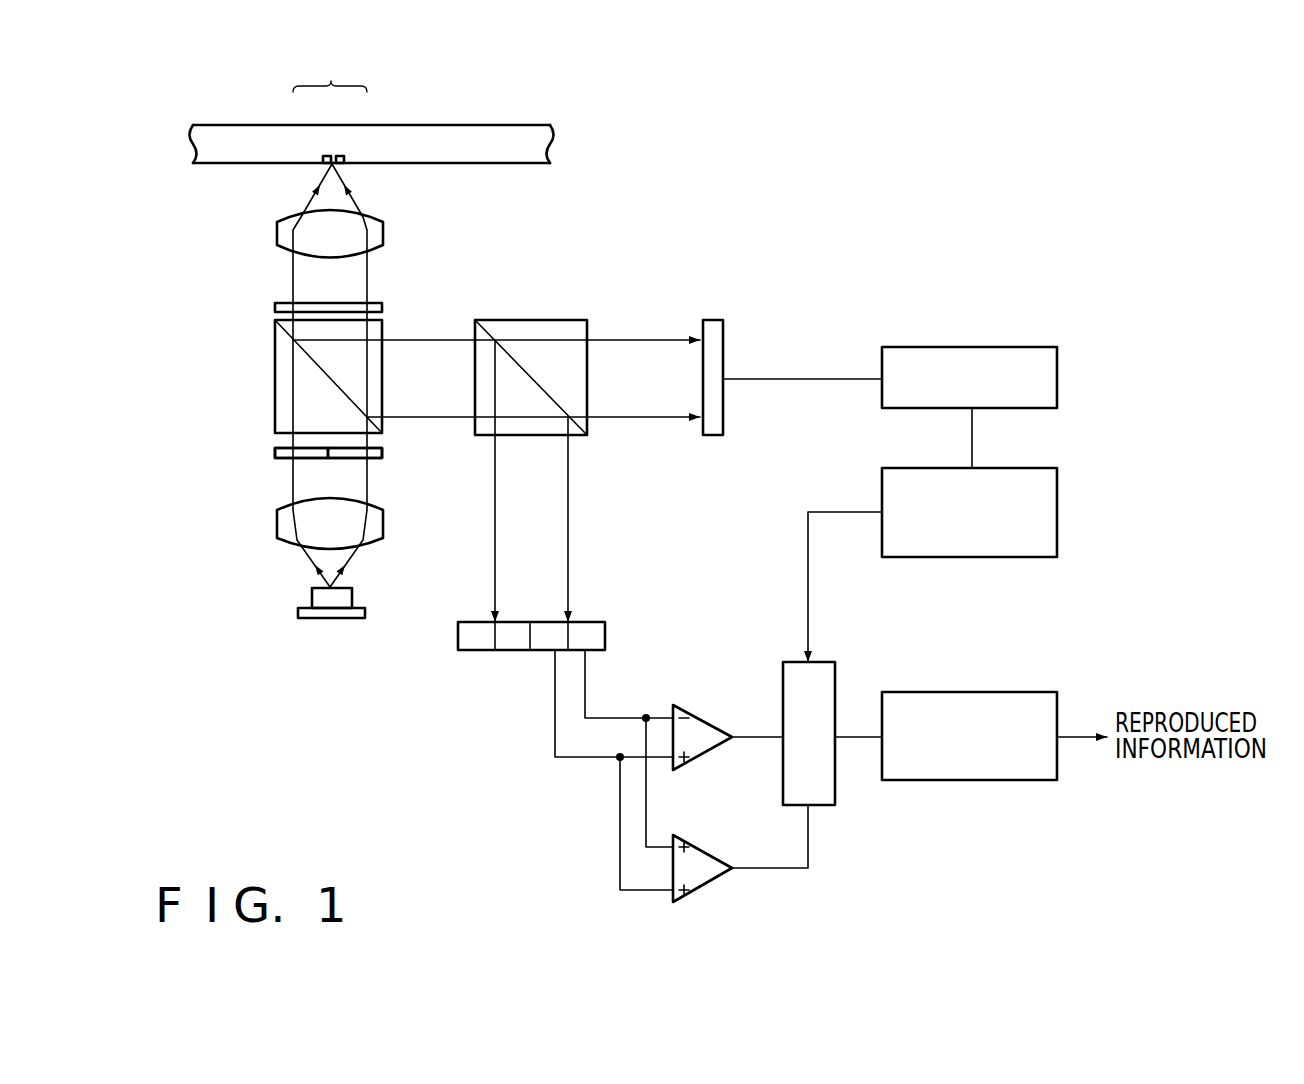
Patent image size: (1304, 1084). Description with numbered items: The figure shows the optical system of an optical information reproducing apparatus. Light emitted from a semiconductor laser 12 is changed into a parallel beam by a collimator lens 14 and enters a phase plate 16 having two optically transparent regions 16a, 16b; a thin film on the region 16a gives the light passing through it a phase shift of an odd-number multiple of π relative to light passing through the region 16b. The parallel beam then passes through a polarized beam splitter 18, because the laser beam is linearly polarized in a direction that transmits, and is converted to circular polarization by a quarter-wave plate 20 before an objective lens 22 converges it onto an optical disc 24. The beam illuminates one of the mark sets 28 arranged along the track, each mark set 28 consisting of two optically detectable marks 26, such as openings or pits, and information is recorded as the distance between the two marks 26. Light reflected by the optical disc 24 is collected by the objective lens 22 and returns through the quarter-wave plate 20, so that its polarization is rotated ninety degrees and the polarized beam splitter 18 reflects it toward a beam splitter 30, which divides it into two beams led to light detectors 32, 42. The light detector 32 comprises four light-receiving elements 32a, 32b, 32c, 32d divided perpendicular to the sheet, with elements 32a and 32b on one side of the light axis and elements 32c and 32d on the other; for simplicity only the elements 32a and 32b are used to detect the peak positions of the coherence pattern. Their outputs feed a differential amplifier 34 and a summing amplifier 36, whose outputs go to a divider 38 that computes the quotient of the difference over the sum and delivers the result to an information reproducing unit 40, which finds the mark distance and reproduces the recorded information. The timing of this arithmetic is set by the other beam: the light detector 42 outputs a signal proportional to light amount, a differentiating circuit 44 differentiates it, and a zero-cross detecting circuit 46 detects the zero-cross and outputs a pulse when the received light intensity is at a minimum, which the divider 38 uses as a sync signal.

The semiconductor laser 12 is at (330, 620).
The collimator lens 14 is at (278, 525).
The phase plate 16 is at (272, 445).
The region 16a is at (382, 453).
The region 16b is at (275, 453).
The polarized beam splitter 18 is at (275, 378).
The λ/4 plate 20 is at (275, 306).
The objective lens 22 is at (278, 236).
The optical disc 24 is at (523, 127).
The mark 26 is at (327, 156).
The mark set 28 is at (330, 73).
The beam splitter 30 is at (537, 320).
The light detector 32 is at (554, 637).
The light-receiving element 32a is at (548, 622).
The light-receiving element 32b is at (605, 636).
The light-receiving element 32c is at (510, 650).
The light-receiving element 32d is at (475, 622).
The differential amplifier 34 is at (713, 720).
The summing amplifier 36 is at (713, 850).
The divider 38 is at (830, 806).
The information reproducing unit 40 is at (972, 692).
The light detector 42 is at (713, 320).
The differentiating circuit 44 is at (972, 347).
The zero-cross detecting circuit 46 is at (1057, 505).